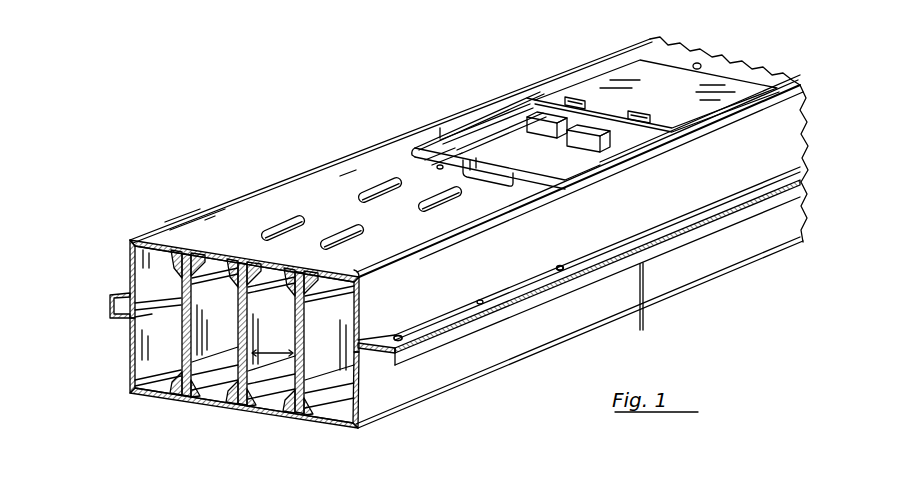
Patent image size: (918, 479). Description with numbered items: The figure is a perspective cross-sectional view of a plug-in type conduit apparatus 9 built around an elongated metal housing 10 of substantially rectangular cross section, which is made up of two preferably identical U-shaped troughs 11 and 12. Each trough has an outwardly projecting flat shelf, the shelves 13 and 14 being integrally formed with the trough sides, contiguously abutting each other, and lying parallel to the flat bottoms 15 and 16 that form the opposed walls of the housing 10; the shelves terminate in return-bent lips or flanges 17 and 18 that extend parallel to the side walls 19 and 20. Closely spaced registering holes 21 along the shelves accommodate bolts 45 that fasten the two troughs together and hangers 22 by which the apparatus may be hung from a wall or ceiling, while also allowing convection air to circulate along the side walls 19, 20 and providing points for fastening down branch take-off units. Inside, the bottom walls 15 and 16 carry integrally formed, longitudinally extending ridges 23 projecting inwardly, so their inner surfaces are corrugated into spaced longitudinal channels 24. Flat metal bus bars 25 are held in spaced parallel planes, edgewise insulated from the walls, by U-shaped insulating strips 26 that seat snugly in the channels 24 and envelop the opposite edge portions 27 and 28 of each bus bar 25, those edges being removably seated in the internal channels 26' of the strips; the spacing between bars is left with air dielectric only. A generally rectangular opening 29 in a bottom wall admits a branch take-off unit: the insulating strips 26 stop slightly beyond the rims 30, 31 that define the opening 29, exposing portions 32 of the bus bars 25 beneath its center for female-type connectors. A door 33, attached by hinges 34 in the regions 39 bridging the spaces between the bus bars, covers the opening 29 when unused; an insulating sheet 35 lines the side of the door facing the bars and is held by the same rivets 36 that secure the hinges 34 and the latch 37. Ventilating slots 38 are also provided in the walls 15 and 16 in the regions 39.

The plug-in type conduit apparatus 9 is at (239, 285).
The elongated metal housing 10 is at (356, 163).
The trough 11 is at (210, 218).
The trough 12 is at (152, 397).
The shelf or rim 13 is at (128, 297).
The shelf or rim 14 is at (130, 372).
The flat bottom 15 is at (160, 233).
The flat bottom 16 is at (217, 405).
The return-bent lip or flange 17 is at (105, 300).
The return-bent lip or flange 18 is at (110, 316).
The side wall 19 is at (130, 260).
The side wall 20 is at (132, 390).
The registering holes 21 is at (560, 270).
The hanger 22 is at (647, 318).
The ridge 23 is at (262, 275).
The channel 24 is at (313, 278).
The bus bar 25 is at (181, 315).
The insulating strip 26 is at (272, 338).
The internal channel 26' is at (209, 325).
The edge portion 27 is at (192, 297).
The edge portion 28 is at (178, 358).
The rectangular opening 29 is at (490, 127).
The rim 30 is at (423, 148).
The rim 31 is at (530, 107).
The exposed portion 32 is at (560, 150).
The door 33 is at (737, 113).
The hinge 34 is at (573, 100).
The insulating sheet 35 is at (737, 87).
The rivet 36 is at (637, 117).
The latch 37 is at (697, 63).
The ventilating slot 38 is at (300, 218).
The region bridging the spaces between bus bars 39 is at (600, 130).
The bolt 45 is at (400, 338).